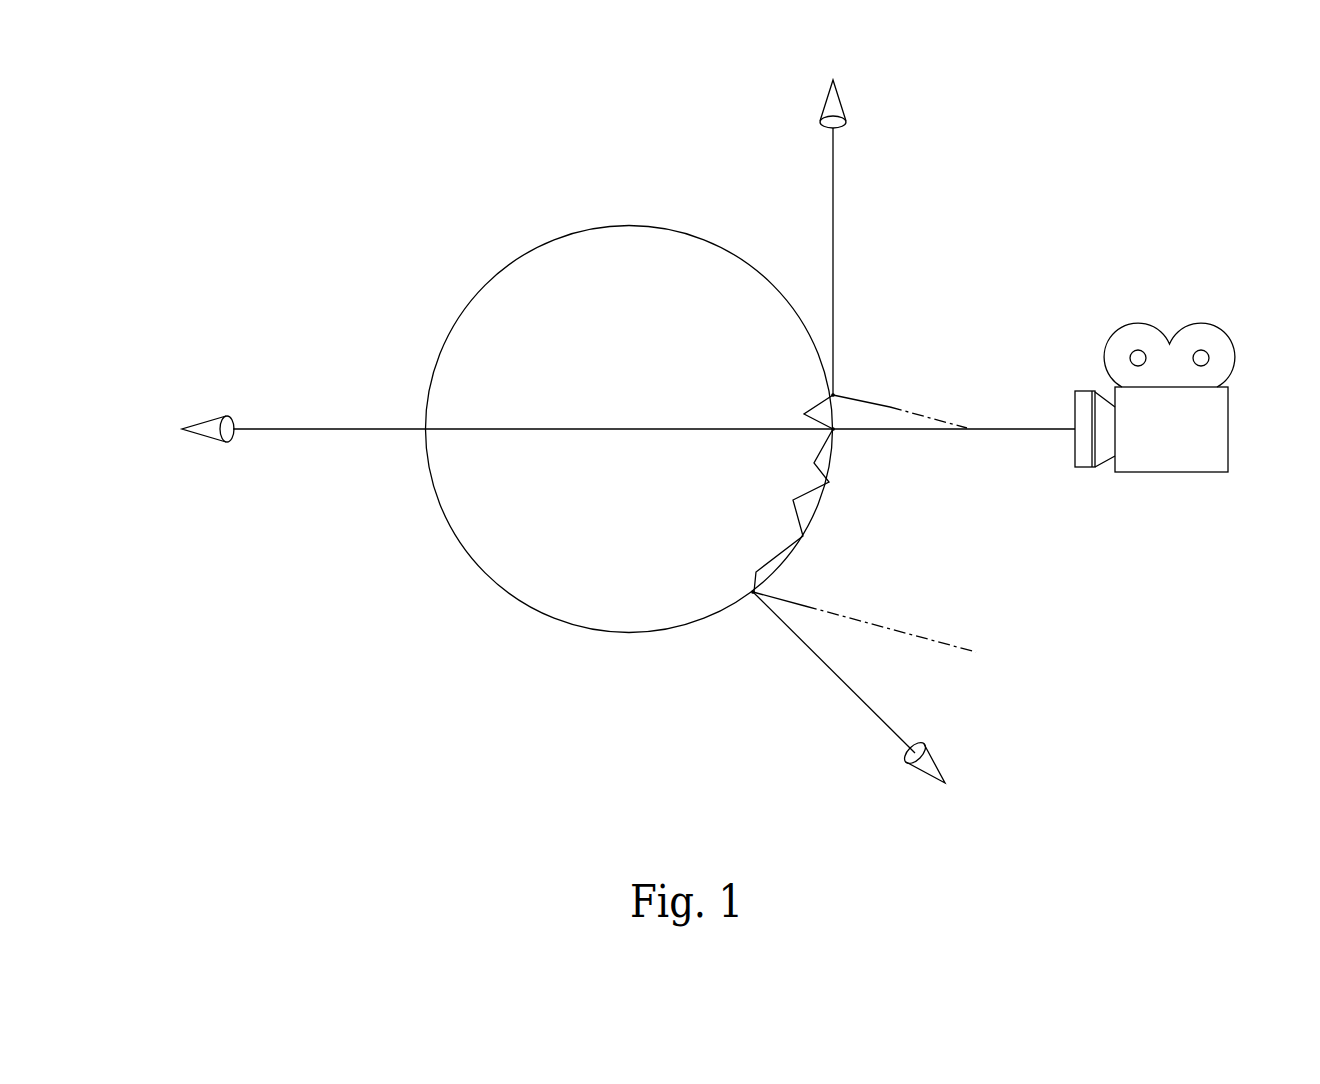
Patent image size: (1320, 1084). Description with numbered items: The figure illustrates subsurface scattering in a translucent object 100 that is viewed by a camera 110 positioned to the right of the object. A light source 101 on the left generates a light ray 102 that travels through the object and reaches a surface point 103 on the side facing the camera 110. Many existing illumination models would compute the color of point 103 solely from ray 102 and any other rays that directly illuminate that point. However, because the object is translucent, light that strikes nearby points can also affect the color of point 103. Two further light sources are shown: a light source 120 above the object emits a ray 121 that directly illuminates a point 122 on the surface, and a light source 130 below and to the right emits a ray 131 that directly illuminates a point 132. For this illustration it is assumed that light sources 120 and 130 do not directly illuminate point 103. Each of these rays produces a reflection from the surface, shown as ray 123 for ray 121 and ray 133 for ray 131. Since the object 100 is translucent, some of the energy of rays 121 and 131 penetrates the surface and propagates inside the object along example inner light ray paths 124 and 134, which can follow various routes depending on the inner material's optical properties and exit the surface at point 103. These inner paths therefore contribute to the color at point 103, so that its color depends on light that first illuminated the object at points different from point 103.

The translucent object 100 is at (648, 634).
The light source 101 is at (212, 443).
The light ray 102 is at (348, 432).
The surface point 103 is at (838, 432).
The camera 110 is at (1153, 472).
The light source 120 is at (838, 104).
The ray 121 is at (836, 185).
The point 122 is at (836, 392).
The ray 123 is at (893, 403).
The light ray path 124 is at (805, 413).
The light source 130 is at (942, 762).
The ray 131 is at (882, 723).
The point 132 is at (750, 600).
The ray 133 is at (843, 612).
The light ray path 134 is at (783, 548).